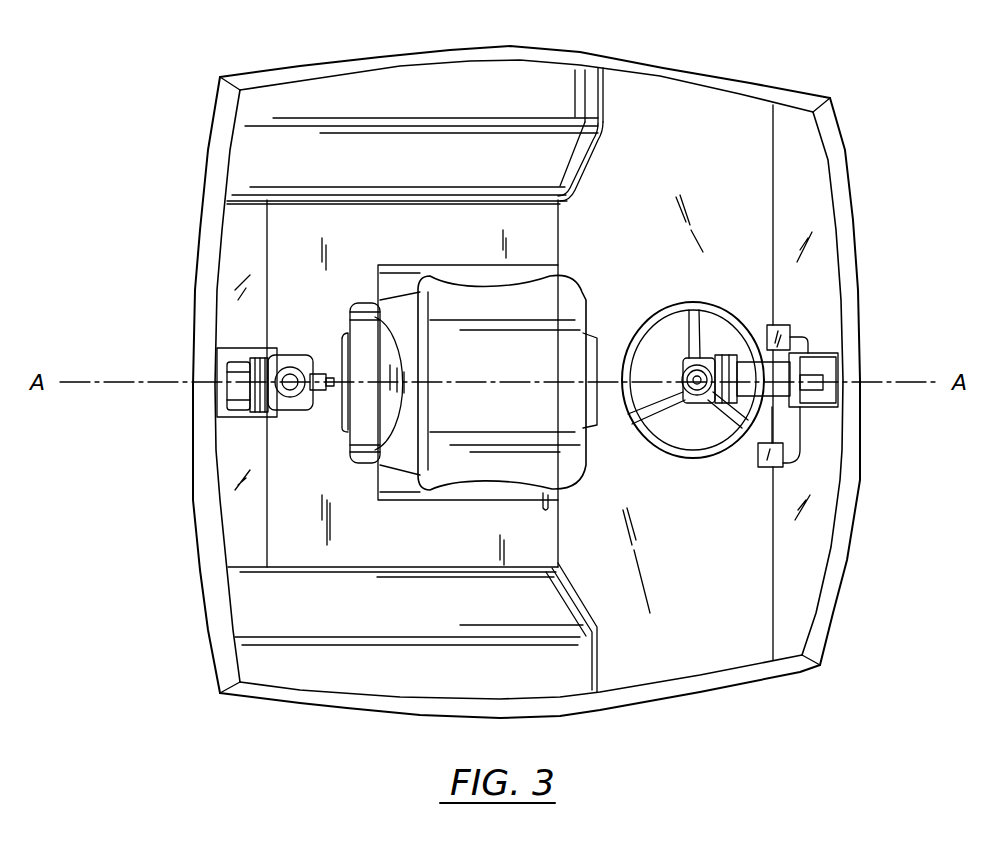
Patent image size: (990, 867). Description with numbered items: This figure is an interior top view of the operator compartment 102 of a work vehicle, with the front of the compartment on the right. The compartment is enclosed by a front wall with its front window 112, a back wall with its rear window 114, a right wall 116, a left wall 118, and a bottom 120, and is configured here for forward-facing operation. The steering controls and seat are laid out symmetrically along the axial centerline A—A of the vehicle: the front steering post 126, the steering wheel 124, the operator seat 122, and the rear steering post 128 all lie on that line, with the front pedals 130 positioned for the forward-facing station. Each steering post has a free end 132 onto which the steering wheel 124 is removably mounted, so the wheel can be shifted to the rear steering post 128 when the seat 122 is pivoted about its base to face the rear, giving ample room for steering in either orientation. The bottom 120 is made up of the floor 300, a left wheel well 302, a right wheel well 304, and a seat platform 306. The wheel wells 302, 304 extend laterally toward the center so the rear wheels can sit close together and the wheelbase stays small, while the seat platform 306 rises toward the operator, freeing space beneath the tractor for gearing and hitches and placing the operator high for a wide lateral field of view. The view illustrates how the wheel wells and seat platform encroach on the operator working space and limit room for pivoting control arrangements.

The operator compartment 102 is at (544, 363).
The front window 112 is at (843, 198).
The rear window 114 is at (215, 597).
The right wall 116 is at (705, 687).
The left wall 118 is at (428, 56).
The bottom 120 is at (655, 114).
The operator seat 122 is at (515, 368).
The steering wheel 124 is at (706, 384).
The front steering post 126 is at (720, 403).
The rear steering post 128 is at (232, 385).
The front pedals 130 is at (767, 330).
The free end 132 is at (323, 377).
The floor 300 is at (737, 108).
The left wheel well 302 is at (333, 155).
The right wheel well 304 is at (353, 625).
The seat platform 306 is at (505, 548).